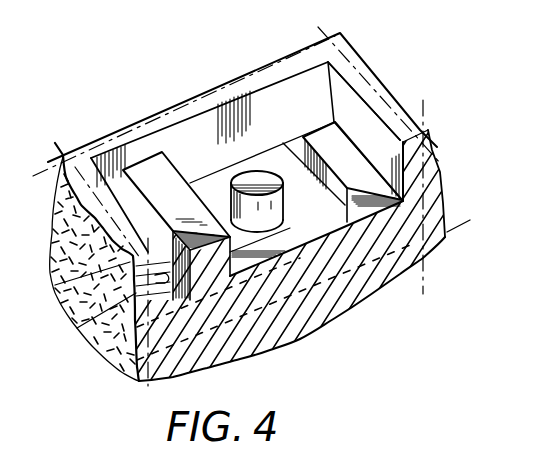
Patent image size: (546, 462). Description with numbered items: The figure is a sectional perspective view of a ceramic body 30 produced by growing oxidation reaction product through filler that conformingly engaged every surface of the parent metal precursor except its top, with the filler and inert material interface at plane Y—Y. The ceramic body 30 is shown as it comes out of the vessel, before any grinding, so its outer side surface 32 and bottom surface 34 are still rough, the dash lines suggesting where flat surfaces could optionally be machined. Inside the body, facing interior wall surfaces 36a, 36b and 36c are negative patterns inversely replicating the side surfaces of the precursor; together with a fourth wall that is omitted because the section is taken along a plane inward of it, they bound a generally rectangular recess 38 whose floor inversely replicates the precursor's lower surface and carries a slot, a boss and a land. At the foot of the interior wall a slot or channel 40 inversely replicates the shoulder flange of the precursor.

The ceramic body 30 is at (92, 340).
The outer side surface 32 is at (55, 285).
The bottom surface 34 is at (323, 326).
The interior wall surface 36a is at (92, 340).
The interior wall surface 36b is at (195, 148).
The interior wall surface 36c is at (373, 124).
The recess 38 is at (283, 143).
The slot or channel 40 is at (115, 358).